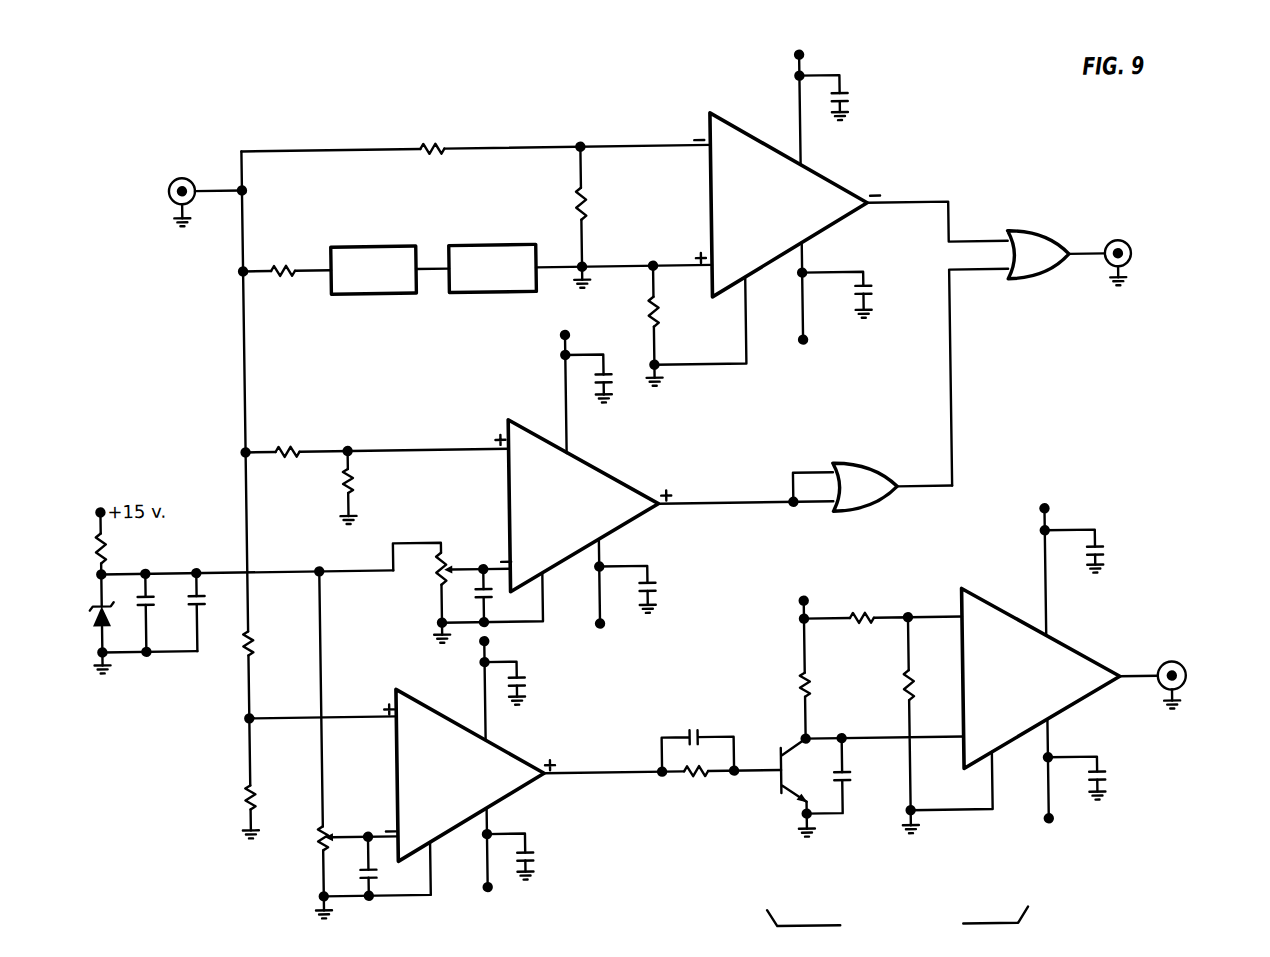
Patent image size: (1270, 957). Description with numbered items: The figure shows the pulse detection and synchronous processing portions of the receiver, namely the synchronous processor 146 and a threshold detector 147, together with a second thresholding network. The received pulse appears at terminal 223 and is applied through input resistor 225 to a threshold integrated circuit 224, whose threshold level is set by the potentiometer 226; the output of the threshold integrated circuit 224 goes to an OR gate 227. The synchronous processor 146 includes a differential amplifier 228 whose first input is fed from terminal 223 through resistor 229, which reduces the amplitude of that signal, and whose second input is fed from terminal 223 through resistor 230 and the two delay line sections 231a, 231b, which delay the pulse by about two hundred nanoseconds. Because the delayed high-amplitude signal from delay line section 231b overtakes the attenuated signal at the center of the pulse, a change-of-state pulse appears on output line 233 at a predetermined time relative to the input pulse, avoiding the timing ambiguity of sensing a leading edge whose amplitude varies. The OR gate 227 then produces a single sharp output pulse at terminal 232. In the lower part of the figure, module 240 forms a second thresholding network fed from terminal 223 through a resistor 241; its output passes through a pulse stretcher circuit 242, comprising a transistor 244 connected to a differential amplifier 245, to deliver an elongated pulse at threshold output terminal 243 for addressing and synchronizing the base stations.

The synchronous processor 146 is at (588, 106).
The threshold detector 147 is at (555, 400).
The terminal 223 is at (178, 173).
The threshold integrated circuit 224 is at (604, 537).
The input resistor 225 is at (289, 443).
The potentiometer 226 is at (447, 563).
The OR gate 227 is at (1067, 246).
The differential amplifier 228 is at (813, 180).
The resistor 229 is at (441, 149).
The resistor 230 is at (278, 264).
The delay line section 231a is at (355, 277).
The delay line section 231b is at (474, 277).
The terminal 232 is at (1111, 252).
The output line 233 is at (897, 206).
The module 240 is at (498, 799).
The resistor 241 is at (251, 638).
The pulse stretcher circuit 242 is at (831, 724).
The threshold output terminal 243 is at (1183, 684).
The transistor 244 is at (789, 759).
The differential amplifier 245 is at (1063, 715).